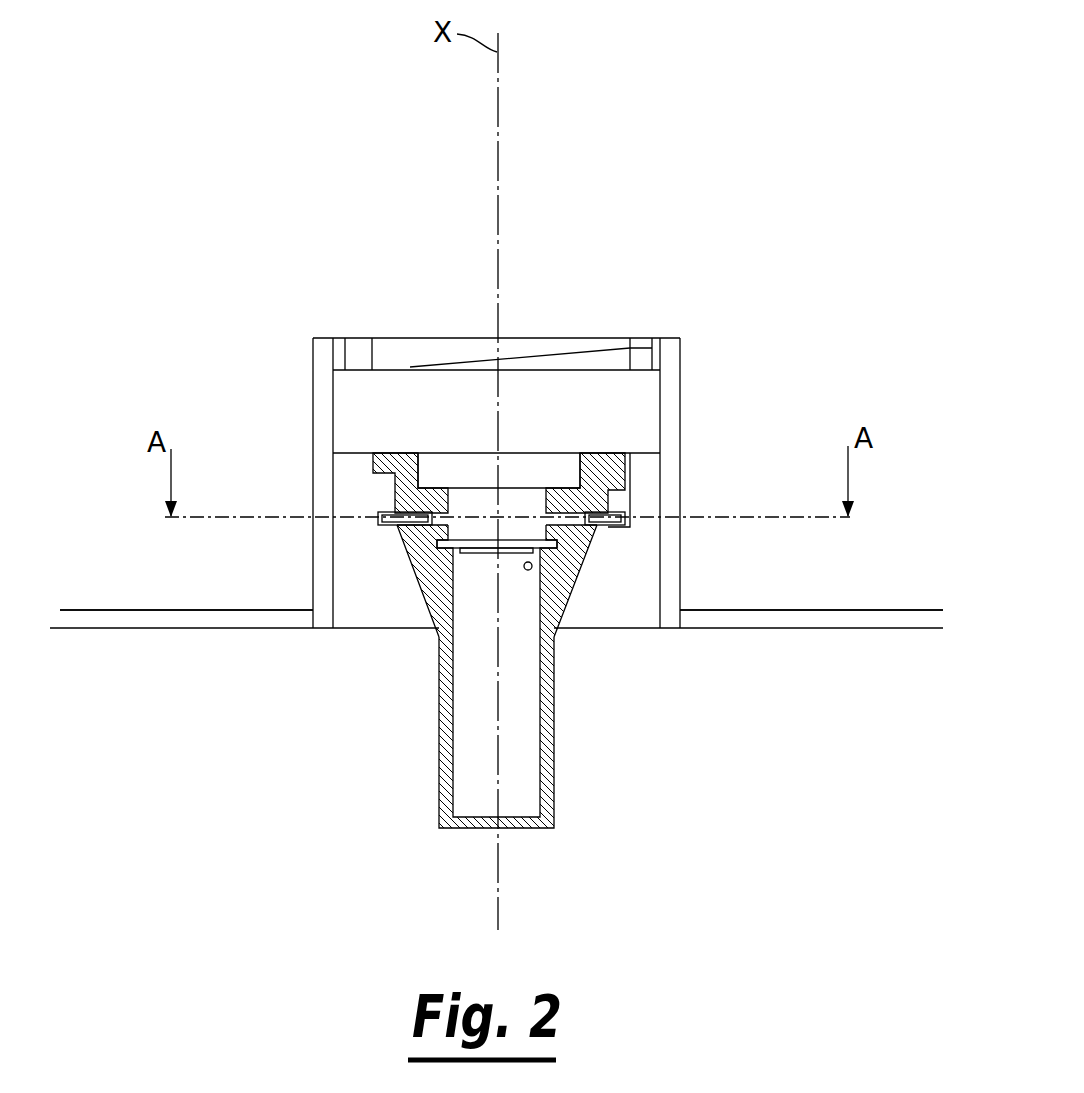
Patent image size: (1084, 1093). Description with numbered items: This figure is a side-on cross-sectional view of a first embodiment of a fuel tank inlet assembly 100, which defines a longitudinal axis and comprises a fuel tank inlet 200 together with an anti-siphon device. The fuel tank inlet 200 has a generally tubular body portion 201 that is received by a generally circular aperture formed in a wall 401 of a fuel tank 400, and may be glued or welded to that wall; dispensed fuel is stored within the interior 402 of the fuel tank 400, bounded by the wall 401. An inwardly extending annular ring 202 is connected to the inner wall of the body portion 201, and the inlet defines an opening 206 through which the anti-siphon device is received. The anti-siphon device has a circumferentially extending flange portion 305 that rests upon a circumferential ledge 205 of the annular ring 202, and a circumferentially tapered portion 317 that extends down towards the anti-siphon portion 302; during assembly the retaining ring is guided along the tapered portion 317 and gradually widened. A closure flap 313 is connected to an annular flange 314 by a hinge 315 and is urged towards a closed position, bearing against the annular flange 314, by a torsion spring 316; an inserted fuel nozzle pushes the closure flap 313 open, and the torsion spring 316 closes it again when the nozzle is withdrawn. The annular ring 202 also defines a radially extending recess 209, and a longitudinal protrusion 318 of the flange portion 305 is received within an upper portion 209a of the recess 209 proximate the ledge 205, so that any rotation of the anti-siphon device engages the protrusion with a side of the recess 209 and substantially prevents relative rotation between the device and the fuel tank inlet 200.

The fuel tank inlet assembly 100 is at (249, 198).
The fuel tank inlet 200 is at (720, 340).
The body portion 201 is at (323, 358).
The annular ring 202 is at (352, 500).
The circumferential ledge 205 is at (385, 478).
The opening 206 is at (458, 315).
The recess 209 is at (620, 503).
The upper portion of the recess 209a is at (647, 465).
The anti-siphon portion 302 is at (580, 783).
The flange portion 305 is at (388, 453).
The closure flap 313 is at (478, 557).
The annular flange 314 is at (458, 531).
The hinge 315 is at (540, 553).
The torsion spring 316 is at (528, 570).
The tapered portion 317 is at (437, 593).
The longitudinal protrusion 318 is at (612, 492).
The fuel tank 400 is at (893, 610).
The wall 401 is at (118, 608).
The interior 402 is at (811, 672).